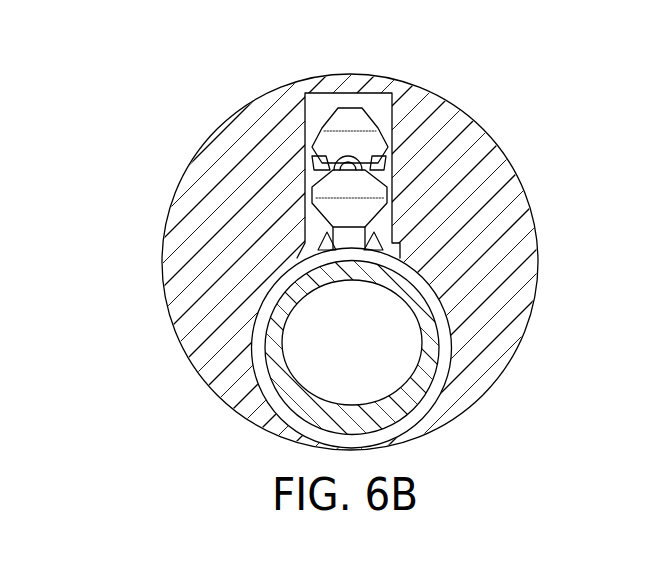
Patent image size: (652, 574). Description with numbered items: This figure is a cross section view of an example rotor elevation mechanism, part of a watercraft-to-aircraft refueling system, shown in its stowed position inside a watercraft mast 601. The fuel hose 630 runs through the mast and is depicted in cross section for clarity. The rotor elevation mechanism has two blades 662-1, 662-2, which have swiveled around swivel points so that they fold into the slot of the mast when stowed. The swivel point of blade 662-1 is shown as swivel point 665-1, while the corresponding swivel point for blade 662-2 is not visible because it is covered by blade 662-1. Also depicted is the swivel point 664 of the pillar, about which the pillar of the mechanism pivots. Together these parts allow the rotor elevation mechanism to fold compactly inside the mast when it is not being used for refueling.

The watercraft mast 601 is at (526, 333).
The fuel hose 630 is at (438, 403).
The swivel point of the pillar 664 is at (323, 251).
The blade of the rotor elevation mechanism 662-1 is at (355, 107).
The blade of the rotor elevation mechanism 662-2 is at (389, 214).
The swivel point of blade 665-1 is at (330, 173).